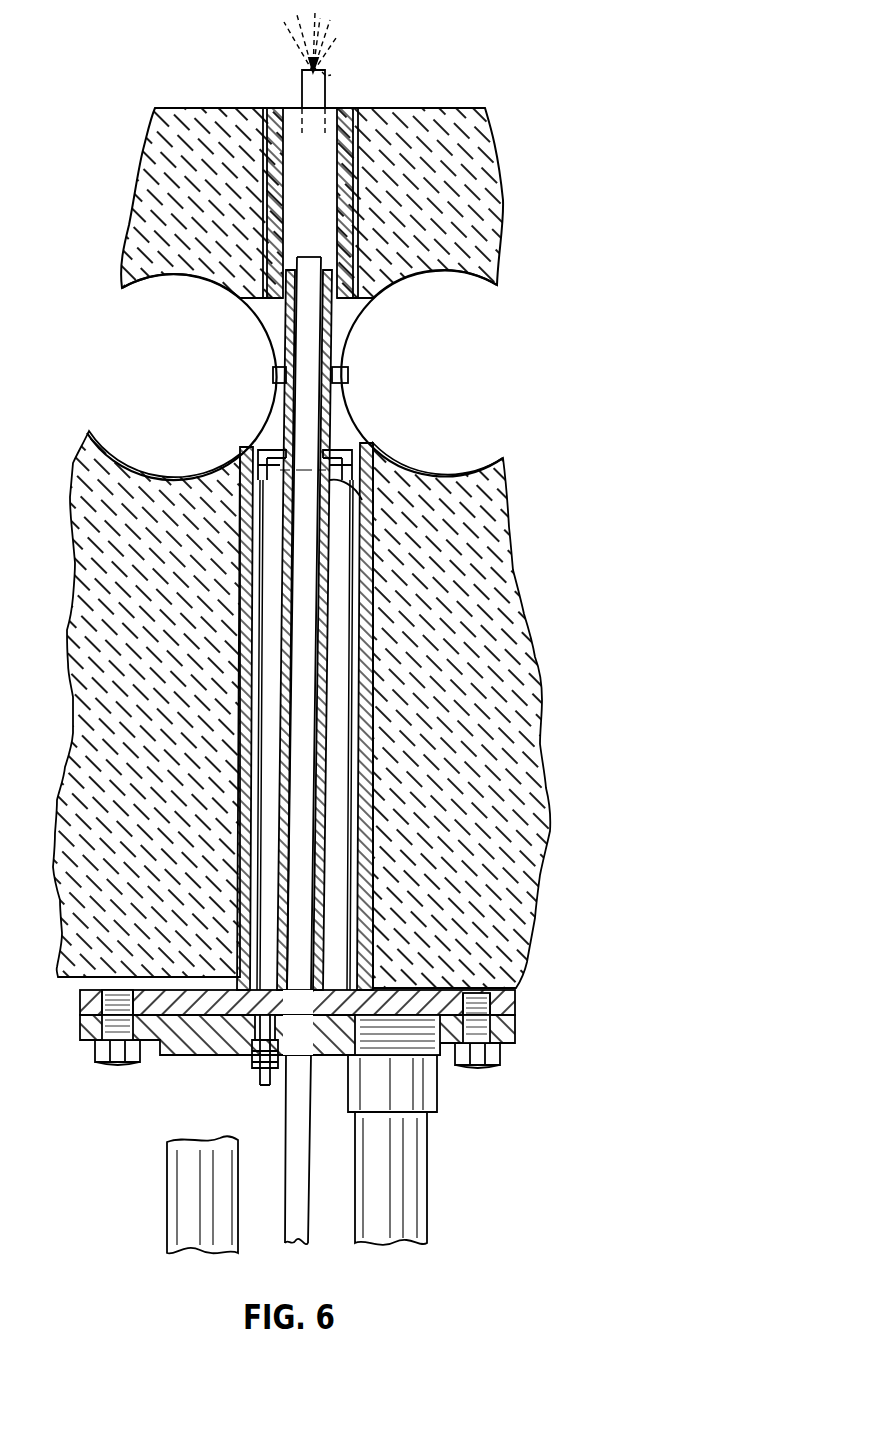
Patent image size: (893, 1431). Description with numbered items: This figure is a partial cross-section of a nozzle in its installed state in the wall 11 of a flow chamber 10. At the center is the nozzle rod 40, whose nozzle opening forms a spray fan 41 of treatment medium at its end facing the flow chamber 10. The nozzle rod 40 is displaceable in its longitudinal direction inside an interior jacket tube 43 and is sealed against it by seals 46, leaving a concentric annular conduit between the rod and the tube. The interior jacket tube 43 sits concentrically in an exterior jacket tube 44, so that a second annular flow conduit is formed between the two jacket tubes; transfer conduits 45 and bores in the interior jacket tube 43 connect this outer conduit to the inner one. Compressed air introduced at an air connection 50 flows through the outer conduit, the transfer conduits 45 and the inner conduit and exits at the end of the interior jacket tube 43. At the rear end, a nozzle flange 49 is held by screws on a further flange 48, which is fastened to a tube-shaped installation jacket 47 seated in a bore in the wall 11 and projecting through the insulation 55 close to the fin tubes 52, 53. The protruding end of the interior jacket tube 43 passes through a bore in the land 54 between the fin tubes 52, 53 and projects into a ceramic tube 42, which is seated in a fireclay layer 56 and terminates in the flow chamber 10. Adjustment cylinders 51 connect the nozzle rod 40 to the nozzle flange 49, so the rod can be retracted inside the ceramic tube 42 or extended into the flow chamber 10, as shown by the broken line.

The flow chamber 10 is at (212, 60).
The wall 11 is at (172, 108).
The nozzle rod 40 is at (337, 70).
The spray fan 41 is at (342, 45).
The ceramic tube 42 is at (283, 180).
The interior jacket tube 43 is at (365, 540).
The exterior jacket tube 44 is at (365, 590).
The transfer conduits 45 is at (367, 478).
The seals 46 is at (360, 514).
The installation jacket 47 is at (365, 797).
The further flange 48 is at (505, 1007).
The nozzle flange 49 is at (505, 1030).
The air connection 50 is at (250, 1062).
The adjustment cylinders 51 is at (178, 1162).
The fin tube 52 is at (456, 351).
The fin tube 53 is at (184, 366).
The land 54 is at (349, 398).
The insulation 55 is at (520, 916).
The fireclay layer 56 is at (178, 233).